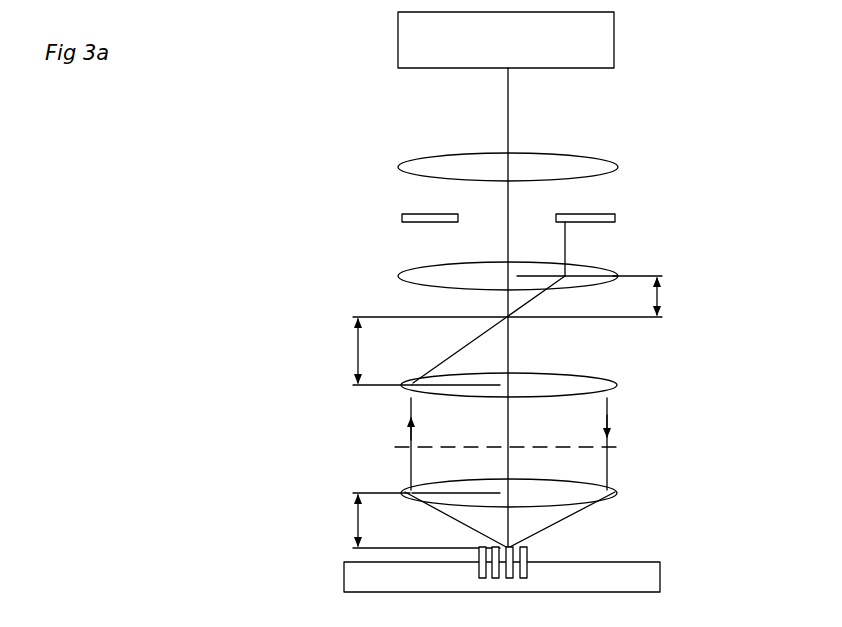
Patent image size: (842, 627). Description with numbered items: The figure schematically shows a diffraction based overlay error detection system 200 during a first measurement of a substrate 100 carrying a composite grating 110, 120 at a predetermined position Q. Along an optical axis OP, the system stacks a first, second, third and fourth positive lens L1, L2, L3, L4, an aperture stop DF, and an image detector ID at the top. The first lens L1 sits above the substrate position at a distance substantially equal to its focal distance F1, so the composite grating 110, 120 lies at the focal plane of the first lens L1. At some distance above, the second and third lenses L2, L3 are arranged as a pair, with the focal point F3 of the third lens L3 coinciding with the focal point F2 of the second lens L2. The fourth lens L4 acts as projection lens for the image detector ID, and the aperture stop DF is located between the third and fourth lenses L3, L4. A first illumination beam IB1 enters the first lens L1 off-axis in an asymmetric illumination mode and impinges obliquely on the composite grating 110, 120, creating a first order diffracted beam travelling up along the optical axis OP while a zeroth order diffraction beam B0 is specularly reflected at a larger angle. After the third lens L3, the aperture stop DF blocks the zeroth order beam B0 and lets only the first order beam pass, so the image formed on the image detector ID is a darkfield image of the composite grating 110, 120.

The diffraction based overlay error detection system 200 is at (630, 112).
The image detector ID is at (425, 50).
The fourth positive lens L4 is at (404, 167).
The optical axis OP is at (508, 208).
The aperture stop DF is at (615, 219).
The third positive lens L3 is at (406, 276).
The focal point of the third lens F3 is at (525, 296).
The focal point of the second lens F2 is at (382, 352).
The second positive lens L2 is at (605, 383).
The zeroth order diffraction beam B0 is at (390, 444).
The first illumination beam IB1 is at (629, 444).
The first positive lens L1 is at (612, 494).
The focal distance of the first lens F1 is at (426, 520).
The composite grating 110 is at (594, 554).
The composite grating 120 is at (594, 554).
The predetermined position of the composite grating Q is at (528, 560).
The substrate 100 is at (646, 578).